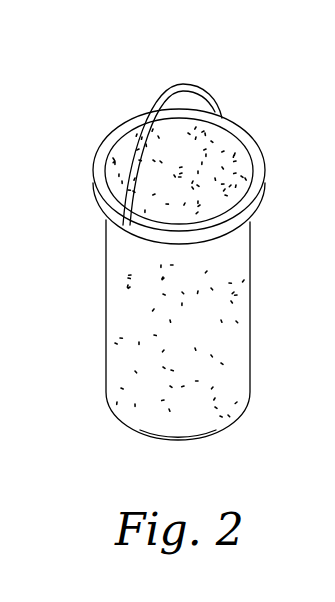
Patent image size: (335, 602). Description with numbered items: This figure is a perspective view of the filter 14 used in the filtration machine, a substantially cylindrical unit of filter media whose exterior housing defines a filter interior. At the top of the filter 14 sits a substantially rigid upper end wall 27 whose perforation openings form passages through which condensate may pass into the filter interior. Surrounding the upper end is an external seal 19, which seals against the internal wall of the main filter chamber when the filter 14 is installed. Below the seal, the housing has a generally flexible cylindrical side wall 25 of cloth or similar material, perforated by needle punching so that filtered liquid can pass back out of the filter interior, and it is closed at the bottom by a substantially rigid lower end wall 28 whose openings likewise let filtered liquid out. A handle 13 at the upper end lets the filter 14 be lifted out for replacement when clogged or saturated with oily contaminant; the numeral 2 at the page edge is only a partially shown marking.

The handle 13 is at (177, 88).
The filter 14 is at (252, 258).
The external seal 19 is at (253, 158).
The side wall 25 is at (140, 279).
The upper end wall 27 is at (217, 135).
The lower end wall 28 is at (205, 437).
The partial numeral at page edge 2 is at (330, 177).